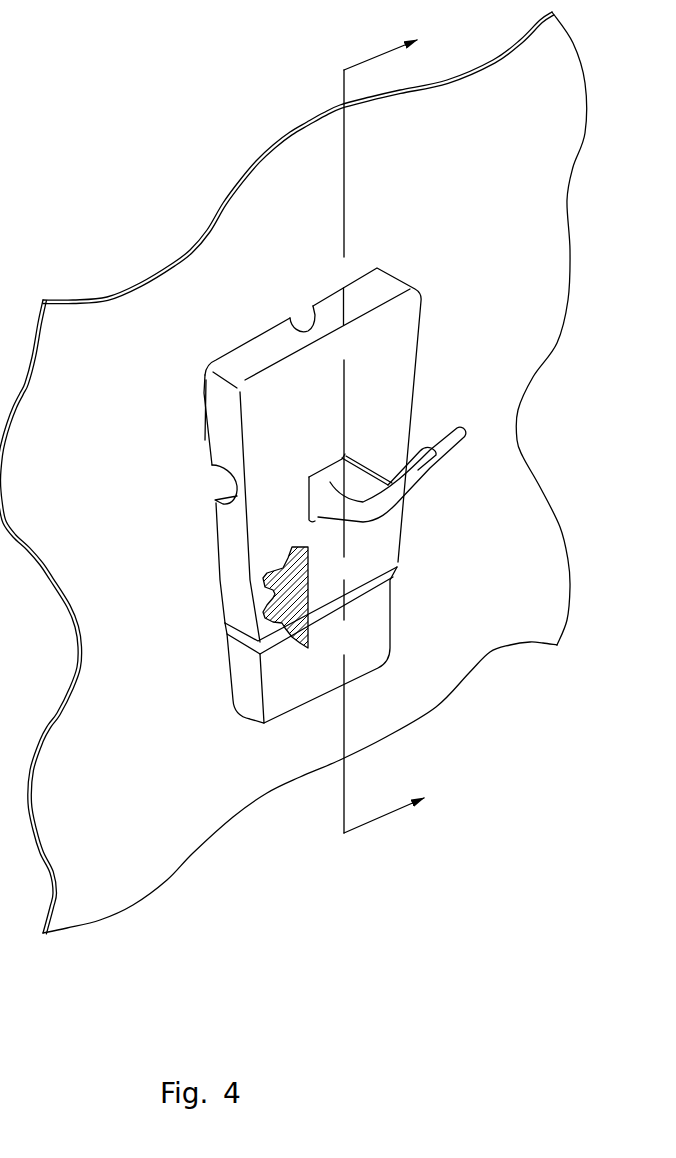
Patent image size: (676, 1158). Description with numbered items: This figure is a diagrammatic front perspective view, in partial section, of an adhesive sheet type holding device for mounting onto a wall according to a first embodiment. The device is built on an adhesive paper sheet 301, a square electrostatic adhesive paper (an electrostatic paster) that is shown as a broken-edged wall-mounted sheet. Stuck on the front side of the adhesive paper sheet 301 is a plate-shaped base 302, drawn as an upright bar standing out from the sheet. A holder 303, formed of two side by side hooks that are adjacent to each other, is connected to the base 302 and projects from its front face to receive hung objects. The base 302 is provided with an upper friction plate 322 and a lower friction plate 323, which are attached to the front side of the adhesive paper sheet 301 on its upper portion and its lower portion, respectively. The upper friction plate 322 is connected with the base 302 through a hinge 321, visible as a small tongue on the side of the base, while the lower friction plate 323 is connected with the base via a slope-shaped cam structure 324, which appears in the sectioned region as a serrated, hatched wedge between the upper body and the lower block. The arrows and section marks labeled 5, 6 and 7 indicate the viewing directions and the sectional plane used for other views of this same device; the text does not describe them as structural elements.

The adhesive paper sheet 301 is at (298, 106).
The base 302 is at (228, 540).
The holder 303 is at (433, 467).
The hinge 321 is at (215, 499).
The upper friction plate 322 is at (222, 427).
The lower friction plate 323 is at (242, 670).
The slope-shaped cam structure 324 is at (268, 577).
The view direction of FIG. 5 is at (226, 646).
The view direction of FIG. 6 is at (204, 398).
The section line 7- 7 is at (402, 422).